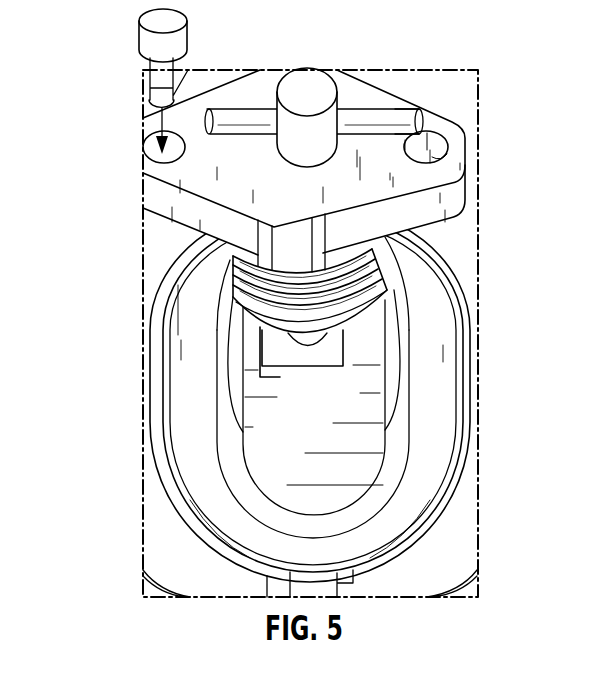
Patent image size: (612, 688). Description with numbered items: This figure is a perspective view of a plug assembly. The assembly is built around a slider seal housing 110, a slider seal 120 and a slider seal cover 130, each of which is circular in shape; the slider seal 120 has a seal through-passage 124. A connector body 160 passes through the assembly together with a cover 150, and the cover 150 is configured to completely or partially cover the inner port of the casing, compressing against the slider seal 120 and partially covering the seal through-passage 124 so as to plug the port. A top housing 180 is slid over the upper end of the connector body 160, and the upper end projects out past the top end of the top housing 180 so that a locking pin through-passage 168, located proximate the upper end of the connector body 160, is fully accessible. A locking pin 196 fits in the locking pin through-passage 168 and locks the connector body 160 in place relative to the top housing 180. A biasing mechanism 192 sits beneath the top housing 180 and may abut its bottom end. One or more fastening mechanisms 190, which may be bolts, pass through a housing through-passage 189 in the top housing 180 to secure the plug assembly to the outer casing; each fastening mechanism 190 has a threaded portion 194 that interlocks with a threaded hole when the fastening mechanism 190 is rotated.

The slider seal housing 110 is at (463, 453).
The slider seal 120 is at (390, 467).
The seal through-passage 124 is at (237, 387).
The slider seal cover 130 is at (437, 348).
The cover 150 is at (330, 470).
The connector body 160 is at (313, 93).
The locking pin through-passage 168 is at (337, 126).
The top housing 180 is at (230, 190).
The housing through-passage 189 is at (438, 160).
The fastening mechanism 190 is at (141, 54).
The biasing mechanism 192 is at (368, 297).
The threaded portion 194 is at (157, 93).
The locking pin 196 is at (402, 112).